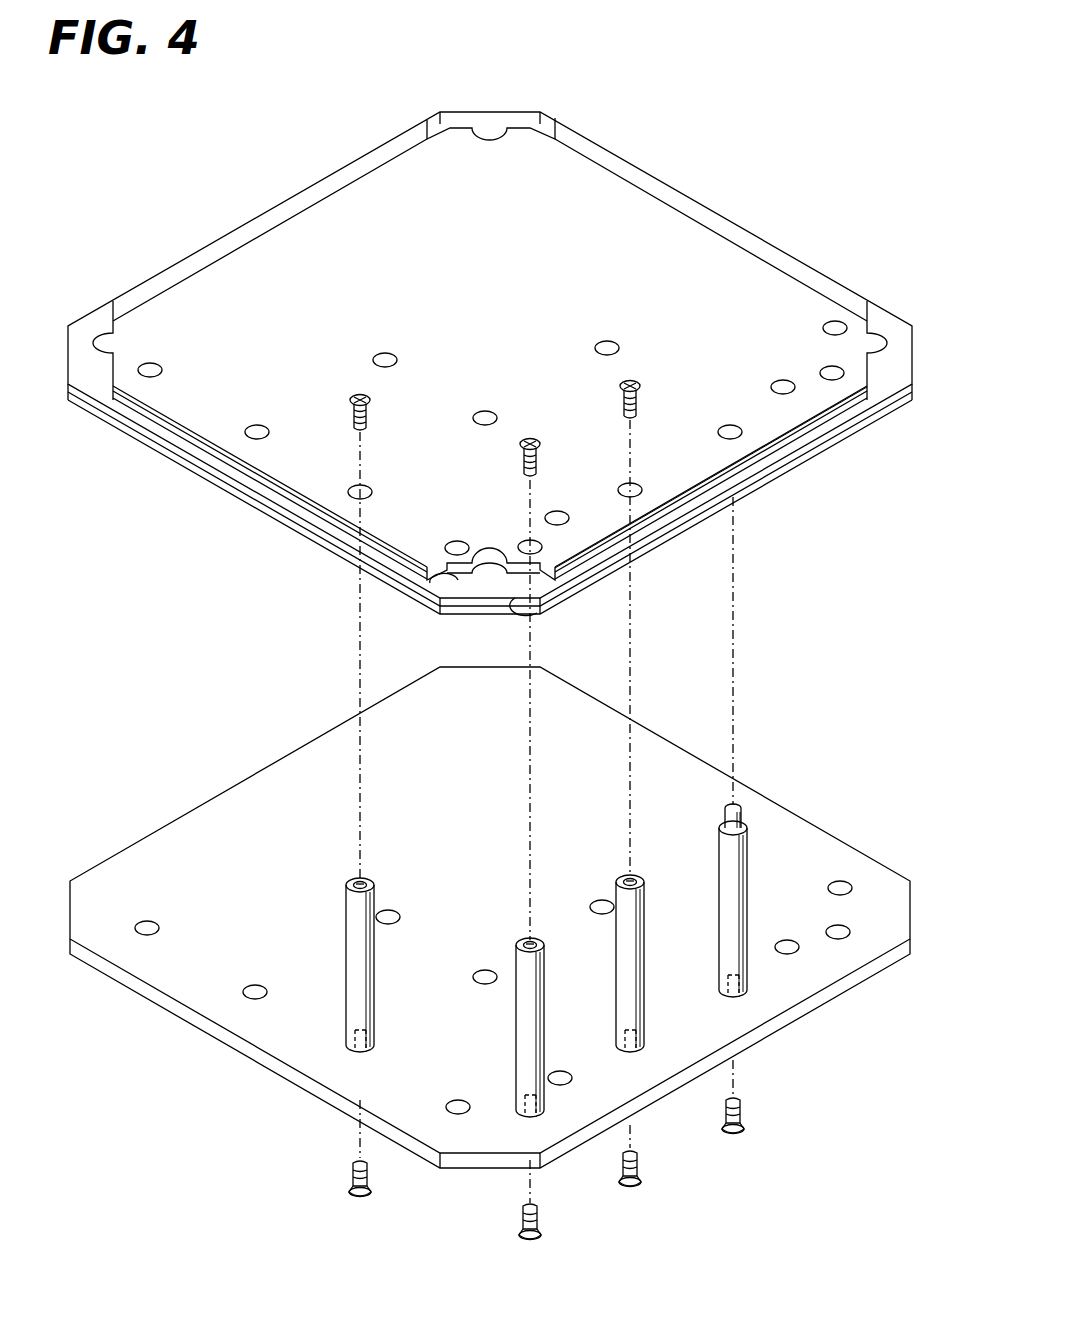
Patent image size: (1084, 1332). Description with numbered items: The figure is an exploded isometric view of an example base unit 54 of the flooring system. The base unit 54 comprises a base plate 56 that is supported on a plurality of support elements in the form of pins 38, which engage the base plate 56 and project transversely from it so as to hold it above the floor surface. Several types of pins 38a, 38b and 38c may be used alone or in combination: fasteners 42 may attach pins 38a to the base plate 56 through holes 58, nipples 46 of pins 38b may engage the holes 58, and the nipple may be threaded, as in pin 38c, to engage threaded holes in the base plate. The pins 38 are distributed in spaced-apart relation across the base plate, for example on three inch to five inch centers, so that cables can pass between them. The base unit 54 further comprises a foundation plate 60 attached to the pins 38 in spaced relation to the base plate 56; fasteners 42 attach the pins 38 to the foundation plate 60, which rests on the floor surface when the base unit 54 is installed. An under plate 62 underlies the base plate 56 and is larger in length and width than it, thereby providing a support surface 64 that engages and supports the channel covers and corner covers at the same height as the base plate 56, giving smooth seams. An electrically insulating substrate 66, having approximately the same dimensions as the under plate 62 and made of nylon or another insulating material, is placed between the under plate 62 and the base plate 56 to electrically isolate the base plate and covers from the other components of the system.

The pins 38 is at (615, 880).
The pin 38a is at (637, 1030).
The pin 38b is at (737, 943).
The pin 38c is at (345, 910).
The fasteners 42 is at (352, 396).
The nipple 46 is at (722, 824).
The base unit 54 is at (818, 473).
The base plate 56 is at (538, 231).
The holes 58 is at (372, 488).
The foundation plate 60 is at (780, 818).
The under plate 62 is at (540, 615).
The support surface 64 is at (446, 586).
The electrically insulating substrate 66 is at (858, 428).